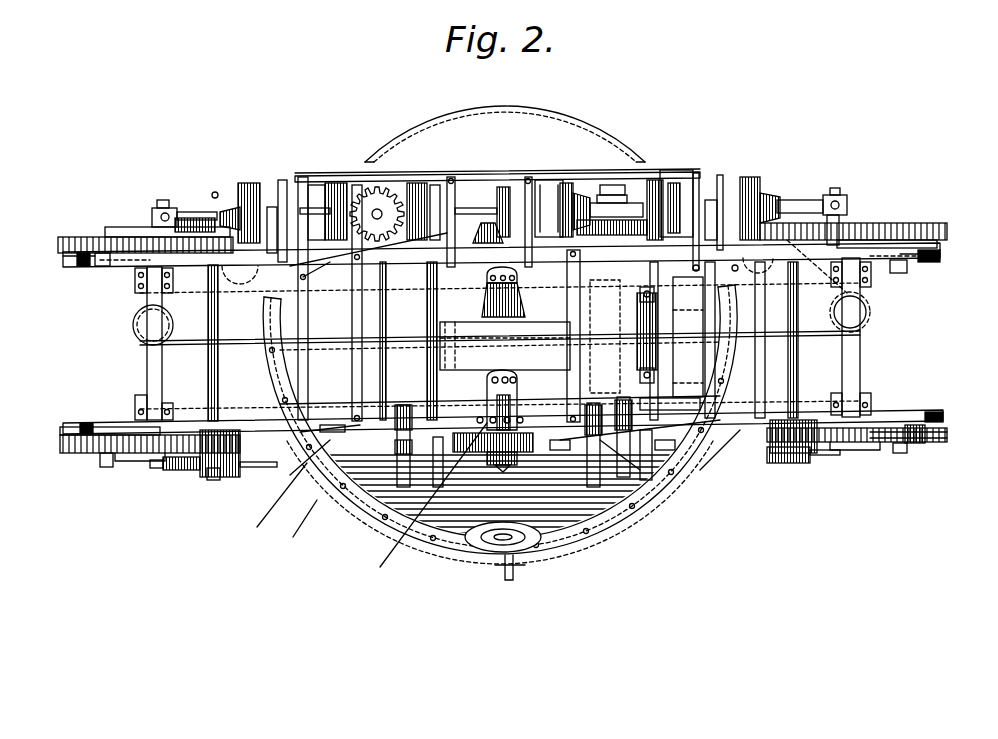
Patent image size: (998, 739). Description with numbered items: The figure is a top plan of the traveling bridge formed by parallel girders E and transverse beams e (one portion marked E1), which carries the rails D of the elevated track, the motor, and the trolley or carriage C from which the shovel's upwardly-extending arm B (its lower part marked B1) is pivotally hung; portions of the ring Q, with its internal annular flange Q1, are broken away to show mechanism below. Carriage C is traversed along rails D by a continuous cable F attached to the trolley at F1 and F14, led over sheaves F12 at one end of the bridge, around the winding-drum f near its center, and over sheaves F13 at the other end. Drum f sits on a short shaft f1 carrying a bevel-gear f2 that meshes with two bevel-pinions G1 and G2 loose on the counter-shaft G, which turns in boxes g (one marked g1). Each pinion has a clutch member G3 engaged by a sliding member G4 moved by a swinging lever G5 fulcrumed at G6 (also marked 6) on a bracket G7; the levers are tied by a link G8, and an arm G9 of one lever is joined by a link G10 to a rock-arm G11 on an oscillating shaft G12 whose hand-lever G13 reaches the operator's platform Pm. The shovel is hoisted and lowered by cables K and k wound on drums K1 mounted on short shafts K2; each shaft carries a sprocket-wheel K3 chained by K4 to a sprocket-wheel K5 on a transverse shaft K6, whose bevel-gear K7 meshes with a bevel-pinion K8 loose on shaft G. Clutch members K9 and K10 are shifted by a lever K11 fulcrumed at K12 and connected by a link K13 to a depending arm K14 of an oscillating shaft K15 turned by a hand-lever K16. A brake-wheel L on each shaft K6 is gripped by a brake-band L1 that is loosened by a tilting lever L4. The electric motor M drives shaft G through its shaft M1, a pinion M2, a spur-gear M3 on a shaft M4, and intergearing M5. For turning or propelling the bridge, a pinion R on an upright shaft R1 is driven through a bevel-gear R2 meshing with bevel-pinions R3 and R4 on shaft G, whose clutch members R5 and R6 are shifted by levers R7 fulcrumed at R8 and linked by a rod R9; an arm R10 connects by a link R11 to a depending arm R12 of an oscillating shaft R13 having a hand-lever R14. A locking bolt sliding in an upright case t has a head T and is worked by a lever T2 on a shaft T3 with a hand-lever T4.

The continuous cable F is at (245, 347).
The cable attachment point F1 is at (272, 205).
The sheaves or pulleys F12 is at (240, 280).
The sheaves or pulleys F13 is at (737, 313).
The cable attachment point F14 is at (727, 350).
The beams or girders E is at (190, 259).
The frame plate E1 is at (688, 337).
The rails D is at (257, 417).
The transverse bars or beams e is at (355, 322).
The trolley or carriage C is at (663, 331).
The upwardly-extending arm B is at (655, 330).
The lower bearing block B1 is at (655, 375).
The cables K is at (937, 424).
The cables k is at (85, 265).
The drums K1 is at (88, 264).
The short shaft K2 is at (203, 213).
The sprocket-wheel K3 is at (105, 247).
The chain K4 is at (232, 205).
The sprocket-wheel K5 is at (190, 216).
The horizontally-arranged shaft K6 is at (208, 353).
The bevel-gear K7 is at (800, 172).
The bevel-pinion K8 is at (795, 200).
The clutch member K9 is at (245, 183).
The companion clutch member K10 is at (262, 183).
The swinging lever K11 is at (283, 180).
The fulcrum K12 is at (305, 279).
The link K13 is at (317, 402).
The depending arm K14 is at (620, 397).
The oscillating shaft K15 is at (661, 465).
The hand-lever K16 is at (684, 472).
The counter-shaft G is at (860, 175).
The boxes g is at (158, 208).
The pin g1 is at (625, 135).
The bevel-pinion G1 is at (594, 186).
The bevel-pinion G2 is at (655, 180).
The clutch member G3 is at (575, 192).
The companion clutch member G4 is at (528, 178).
The swinging lever G5 is at (500, 186).
The fulcrum G6 is at (533, 277).
The bracket G7 is at (665, 263).
The link G8 is at (545, 180).
The arm G9 is at (518, 380).
The link G10 is at (592, 490).
The depending rock-arm G11 is at (660, 480).
The oscillating shaft G12 is at (580, 487).
The hand-lever G13 is at (642, 492).
The post 6 is at (716, 194).
The winding-drum f is at (640, 170).
The short shaft f1 is at (605, 185).
The bevel-gear f2 is at (612, 190).
The pinion R is at (376, 207).
The upright shaft R1 is at (362, 175).
The bevel-gear R2 is at (390, 222).
The bevel-pinion R3 is at (362, 250).
The bevel-pinion R4 is at (385, 196).
The clutch member R5 is at (335, 183).
The companion clutch member R6 is at (450, 169).
The swinging lever R7 is at (310, 180).
The fulcrum R8 is at (300, 268).
The link or rod R9 is at (392, 172).
The arm R10 is at (450, 307).
The link R11 is at (423, 407).
The depending arm R12 is at (403, 410).
The oscillating shaft R13 is at (500, 424).
The hand-lever R14 is at (417, 442).
The electric motor M is at (502, 388).
The motor shaft M1 is at (517, 377).
The pinion M2 is at (497, 453).
The spur-gear M3 is at (483, 432).
The shaft M4 is at (338, 517).
The intergearing M5 is at (487, 222).
The operator's platform Pm is at (500, 503).
The ring Q is at (537, 560).
The annular flange Q1 is at (479, 558).
The bolt head T is at (331, 419).
The upright case t is at (330, 437).
The arm or lever T2 is at (263, 508).
The shaft T3 is at (287, 528).
The hand-lever T4 is at (425, 507).
The brake-wheel L is at (207, 472).
The brake-band L1 is at (240, 466).
The vertically-tilting lever L4 is at (760, 417).